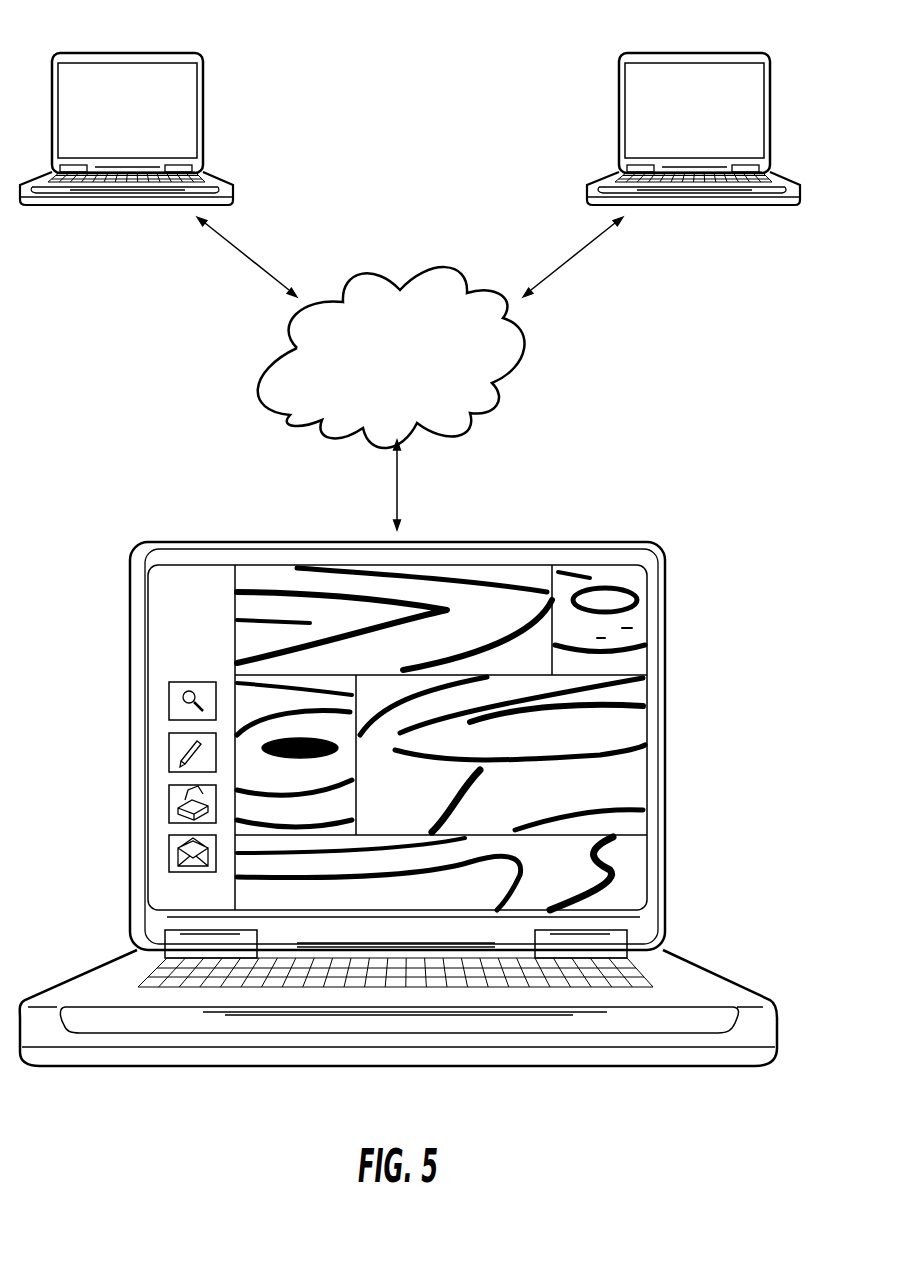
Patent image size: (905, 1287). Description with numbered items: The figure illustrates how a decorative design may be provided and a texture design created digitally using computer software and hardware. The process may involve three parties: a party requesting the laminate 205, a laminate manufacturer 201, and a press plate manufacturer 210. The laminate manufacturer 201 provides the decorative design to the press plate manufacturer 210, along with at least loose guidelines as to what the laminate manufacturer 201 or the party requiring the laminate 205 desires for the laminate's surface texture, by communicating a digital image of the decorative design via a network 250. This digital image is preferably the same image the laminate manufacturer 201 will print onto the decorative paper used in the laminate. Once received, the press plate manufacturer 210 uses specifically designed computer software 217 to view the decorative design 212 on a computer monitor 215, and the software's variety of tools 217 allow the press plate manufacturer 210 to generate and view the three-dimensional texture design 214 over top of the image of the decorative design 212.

The laminate manufacturer 201 is at (772, 80).
The party requesting the laminate 205 is at (206, 80).
The network 250 is at (414, 374).
The press plate manufacturer 210 is at (668, 577).
The computer monitor 215 is at (648, 928).
The computer software tools 217 is at (183, 616).
The texture design 214 is at (620, 708).
The decorative design 212 is at (621, 833).